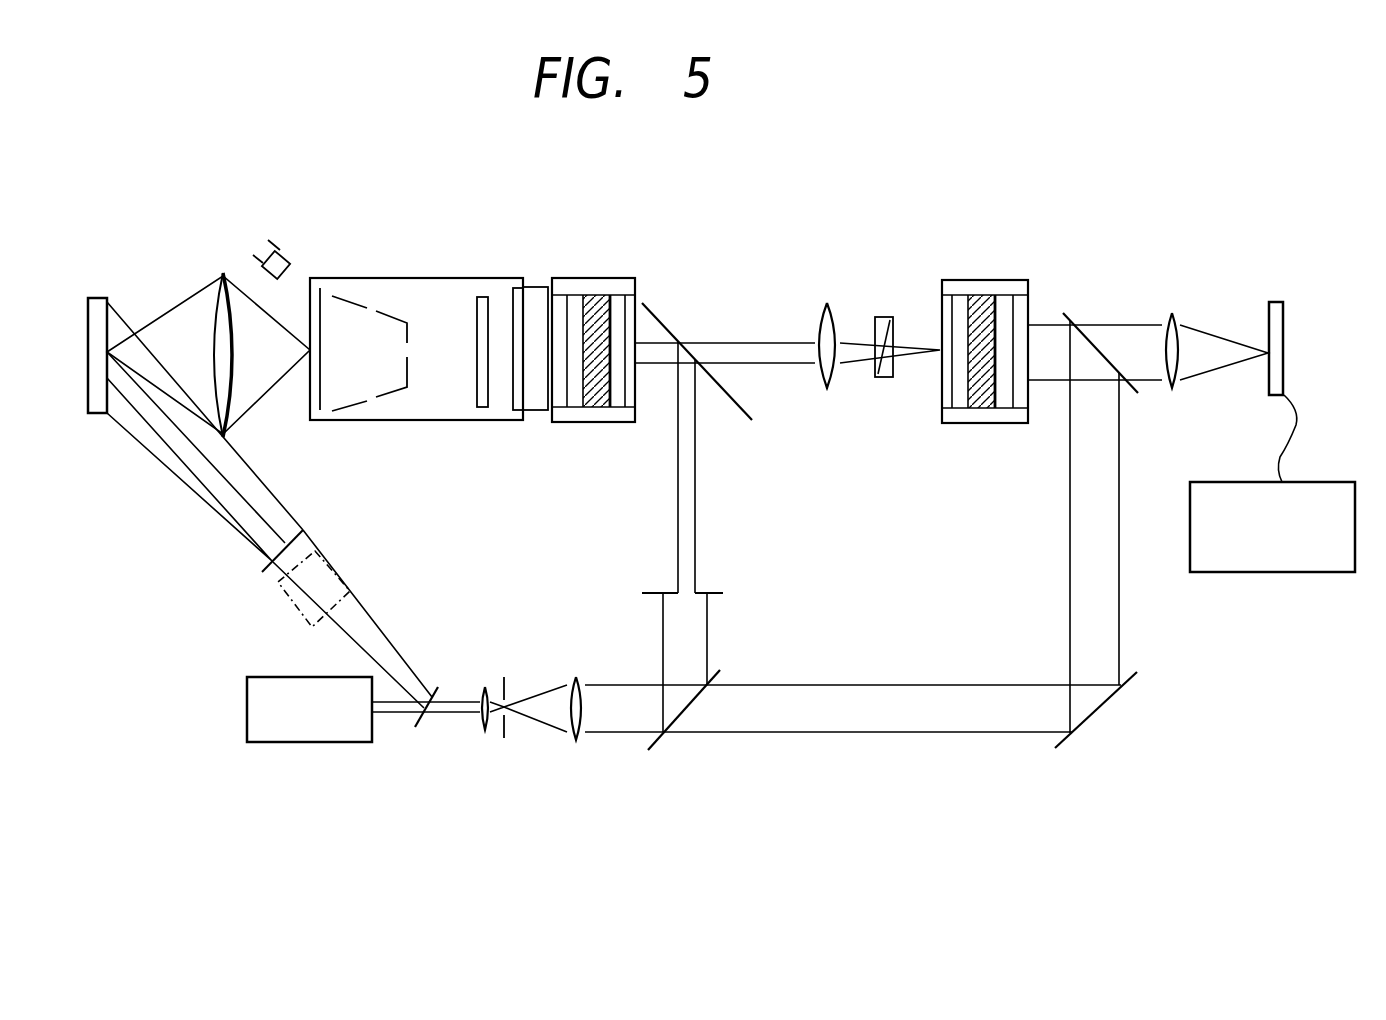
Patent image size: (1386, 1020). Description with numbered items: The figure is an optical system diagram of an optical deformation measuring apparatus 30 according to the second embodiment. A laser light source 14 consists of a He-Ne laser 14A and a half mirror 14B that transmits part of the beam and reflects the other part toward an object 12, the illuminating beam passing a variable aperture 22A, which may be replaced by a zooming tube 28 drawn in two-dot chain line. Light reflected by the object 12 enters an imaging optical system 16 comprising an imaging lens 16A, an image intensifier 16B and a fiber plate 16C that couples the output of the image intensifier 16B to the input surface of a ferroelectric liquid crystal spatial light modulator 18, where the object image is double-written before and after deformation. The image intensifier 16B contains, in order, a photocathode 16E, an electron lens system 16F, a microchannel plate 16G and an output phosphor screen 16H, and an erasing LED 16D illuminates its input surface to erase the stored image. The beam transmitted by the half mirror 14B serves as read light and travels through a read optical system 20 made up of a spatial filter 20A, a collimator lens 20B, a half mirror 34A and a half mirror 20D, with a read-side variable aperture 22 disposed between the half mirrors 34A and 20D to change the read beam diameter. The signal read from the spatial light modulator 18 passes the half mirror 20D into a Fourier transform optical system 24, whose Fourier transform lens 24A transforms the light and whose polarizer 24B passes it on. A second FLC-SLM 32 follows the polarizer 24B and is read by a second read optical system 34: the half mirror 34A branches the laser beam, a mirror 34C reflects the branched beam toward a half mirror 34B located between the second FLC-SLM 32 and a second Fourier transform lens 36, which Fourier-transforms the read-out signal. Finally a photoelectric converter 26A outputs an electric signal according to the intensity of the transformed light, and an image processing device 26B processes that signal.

The object 12 is at (93, 415).
The laser light source 14 is at (447, 826).
The He-Ne laser 14A is at (270, 677).
The half mirror 14B is at (423, 730).
The imaging optical system 16 is at (558, 187).
The imaging lens 16A is at (224, 272).
The image intensifier 16B is at (436, 428).
The fiber plate 16C is at (540, 287).
The erasing LED 16D is at (283, 253).
The photocathode 16E is at (315, 420).
The electron lens system 16F is at (357, 407).
The microchannel plate 16G is at (483, 297).
The output phosphor screen 16H is at (513, 404).
The ferroelectric liquid crystal spatial light modulator 18 is at (609, 262).
The read optical system 20 is at (723, 656).
The spatial filter 20A is at (504, 738).
The collimator lens 20B is at (585, 740).
The half mirror 20D is at (750, 420).
The variable aperture 22 is at (723, 593).
The variable aperture 22A is at (258, 571).
The Fourier transform optical system 24 is at (778, 248).
The Fourier transform lens 24A is at (823, 303).
The polarizer 24B is at (884, 317).
The photoelectric converter 26A is at (1268, 315).
The image processing device 26B is at (1322, 482).
The zooming tube 28 is at (352, 585).
The optical deformation measuring apparatus 30 is at (887, 758).
The second FLC-SLM 32 is at (962, 280).
The second read optical system 34 is at (1168, 659).
The half mirror 34A is at (685, 717).
The half mirror 34B is at (1065, 313).
The mirror 34C is at (1097, 712).
The second Fourier transform lens 36 is at (1168, 313).